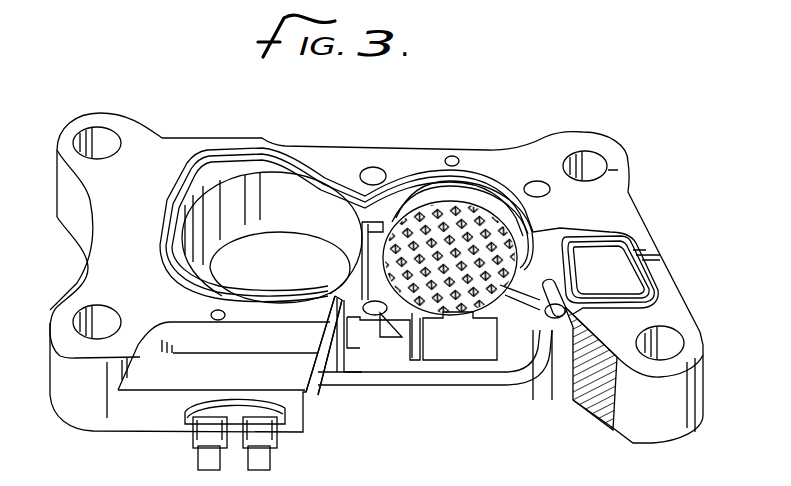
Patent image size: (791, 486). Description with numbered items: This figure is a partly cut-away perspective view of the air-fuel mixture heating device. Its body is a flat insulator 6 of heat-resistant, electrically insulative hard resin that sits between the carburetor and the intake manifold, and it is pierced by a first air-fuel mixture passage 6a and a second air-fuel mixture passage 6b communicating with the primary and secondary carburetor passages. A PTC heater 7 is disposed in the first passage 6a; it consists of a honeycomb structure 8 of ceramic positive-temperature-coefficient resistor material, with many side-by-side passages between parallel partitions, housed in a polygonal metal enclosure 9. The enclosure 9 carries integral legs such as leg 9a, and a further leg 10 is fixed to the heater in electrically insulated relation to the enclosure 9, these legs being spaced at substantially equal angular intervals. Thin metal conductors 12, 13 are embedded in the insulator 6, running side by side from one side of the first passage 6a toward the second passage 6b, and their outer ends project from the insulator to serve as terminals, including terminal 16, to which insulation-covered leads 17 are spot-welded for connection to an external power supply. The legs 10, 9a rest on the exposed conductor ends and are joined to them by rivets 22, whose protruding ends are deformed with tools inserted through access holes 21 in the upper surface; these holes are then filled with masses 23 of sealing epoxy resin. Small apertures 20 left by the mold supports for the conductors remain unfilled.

The insulator 6 is at (658, 178).
The first air-fuel mixture passage 6a is at (503, 221).
The second air-fuel mixture passage 6b is at (289, 268).
The PTC heater 7 is at (429, 367).
The honeycomb structure 8 is at (478, 218).
The metal enclosure 9 is at (485, 353).
The leg 9a is at (561, 390).
The leg 10 is at (365, 322).
The conductor 12 is at (340, 374).
The conductor 13 is at (438, 386).
The terminal 16 is at (197, 462).
The insulation-covered lead 17 is at (275, 462).
The aperture 20 is at (452, 157).
The access hole 21 is at (554, 284).
The rivet 22 is at (337, 297).
The mass of sealing epoxy resin 23 is at (376, 170).